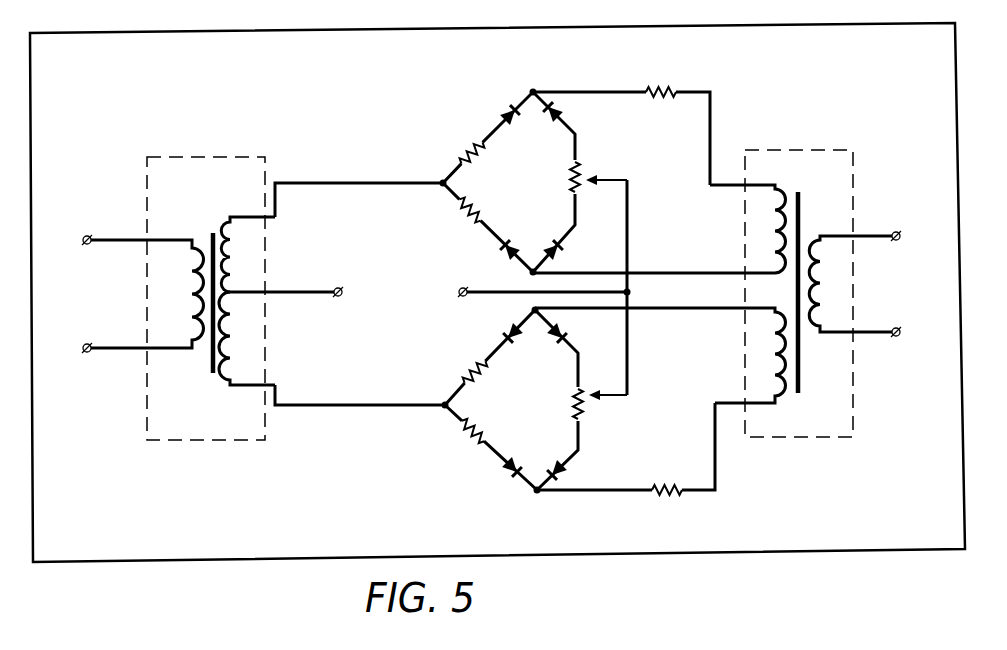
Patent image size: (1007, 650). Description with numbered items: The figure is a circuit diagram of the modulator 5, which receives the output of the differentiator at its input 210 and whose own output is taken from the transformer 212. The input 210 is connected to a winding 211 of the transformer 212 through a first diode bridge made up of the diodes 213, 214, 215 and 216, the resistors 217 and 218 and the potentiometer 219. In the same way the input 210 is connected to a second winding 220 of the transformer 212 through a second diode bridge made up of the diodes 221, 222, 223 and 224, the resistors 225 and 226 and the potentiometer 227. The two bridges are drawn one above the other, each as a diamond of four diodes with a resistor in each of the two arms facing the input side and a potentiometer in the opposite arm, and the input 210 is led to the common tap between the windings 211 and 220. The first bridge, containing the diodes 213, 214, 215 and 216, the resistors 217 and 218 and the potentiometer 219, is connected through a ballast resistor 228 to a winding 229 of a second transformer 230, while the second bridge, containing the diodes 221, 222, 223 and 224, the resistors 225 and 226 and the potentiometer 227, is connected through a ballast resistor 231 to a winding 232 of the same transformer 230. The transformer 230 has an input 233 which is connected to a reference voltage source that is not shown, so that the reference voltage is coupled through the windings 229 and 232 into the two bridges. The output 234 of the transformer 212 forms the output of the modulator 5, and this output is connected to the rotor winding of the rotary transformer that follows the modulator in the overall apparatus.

The modulator 5 is at (962, 114).
The input 210 is at (459, 291).
The winding 211 is at (270, 218).
The transformer 212 is at (149, 152).
The diode 213 is at (503, 113).
The diode 214 is at (565, 117).
The diode 215 is at (505, 255).
The diode 216 is at (560, 250).
The resistor 217 is at (463, 150).
The resistor 218 is at (462, 215).
The potentiometer 219 is at (570, 180).
The winding 220 is at (290, 295).
The diode 221 is at (505, 329).
The diode 222 is at (564, 333).
The diode 223 is at (503, 468).
The diode 224 is at (568, 468).
The resistor 225 is at (468, 370).
The resistor 226 is at (479, 426).
The potentiometer 227 is at (574, 406).
The ballast resistor 228 is at (655, 86).
The winding 229 is at (737, 187).
The transformer 230 is at (811, 146).
The ballast resistor 231 is at (667, 493).
The winding 232 is at (733, 309).
The input 233 is at (896, 242).
The output 234 is at (87, 246).